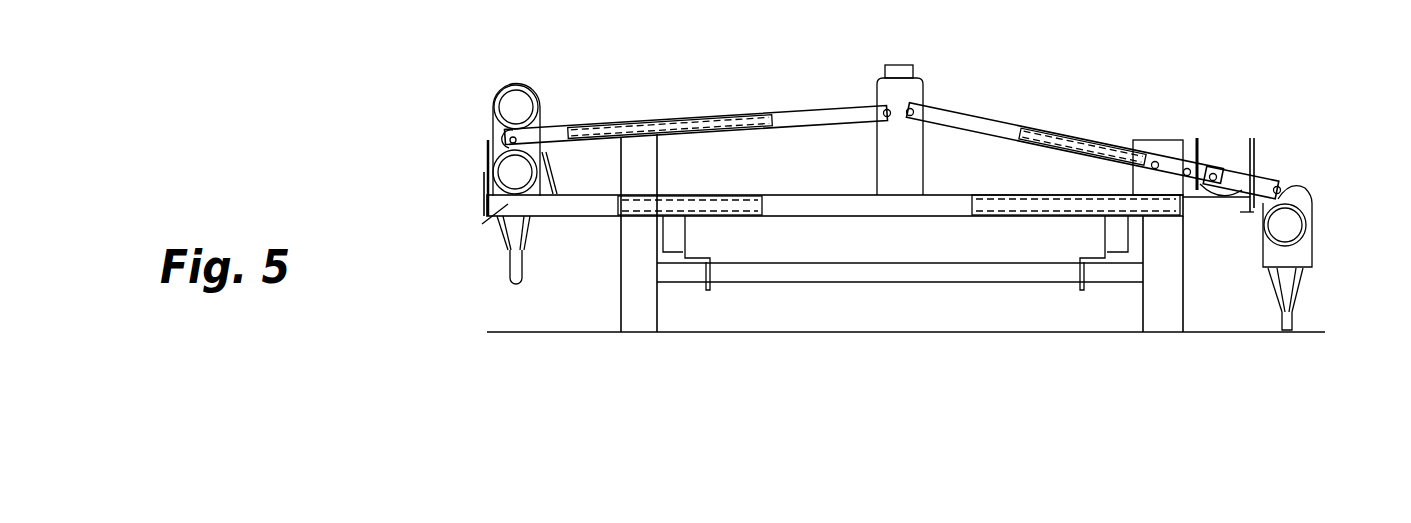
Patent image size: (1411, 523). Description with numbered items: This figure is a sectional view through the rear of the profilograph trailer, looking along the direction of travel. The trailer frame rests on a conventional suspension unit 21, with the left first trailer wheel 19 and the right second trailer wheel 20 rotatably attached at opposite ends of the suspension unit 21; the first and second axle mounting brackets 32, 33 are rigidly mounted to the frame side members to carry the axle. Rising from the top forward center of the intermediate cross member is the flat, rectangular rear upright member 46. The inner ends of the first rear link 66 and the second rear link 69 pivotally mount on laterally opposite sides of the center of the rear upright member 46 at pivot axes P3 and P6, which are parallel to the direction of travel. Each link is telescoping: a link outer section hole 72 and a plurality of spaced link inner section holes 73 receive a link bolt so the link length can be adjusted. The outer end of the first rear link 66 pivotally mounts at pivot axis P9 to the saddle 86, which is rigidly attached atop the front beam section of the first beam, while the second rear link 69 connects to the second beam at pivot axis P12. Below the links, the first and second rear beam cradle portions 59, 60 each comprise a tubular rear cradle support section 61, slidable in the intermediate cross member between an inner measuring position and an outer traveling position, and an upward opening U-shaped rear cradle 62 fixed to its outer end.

The left first trailer wheel 19 is at (1170, 316).
The right second trailer wheel 20 is at (633, 323).
The suspension unit 21 is at (960, 283).
The first axle mounting bracket 32 is at (1082, 288).
The second axle mounting bracket 33 is at (712, 288).
The rear upright member 46 is at (920, 92).
The first rear beam cradle portion 59 is at (1217, 207).
The second rear beam cradle portion 60 is at (591, 213).
The rear cradle support section 61 is at (487, 213).
The rear cradle 62 is at (487, 202).
The first rear link 66 is at (1095, 140).
The second rear link 69 is at (747, 112).
The link outer section hole 72 is at (1215, 173).
The link inner section holes 73 is at (1157, 162).
The saddle 86 is at (1300, 200).
The pivot axis P3 is at (911, 118).
The pivot axis P6 is at (884, 108).
The pivot axis P9 is at (1279, 188).
The pivot axis P12 is at (505, 136).